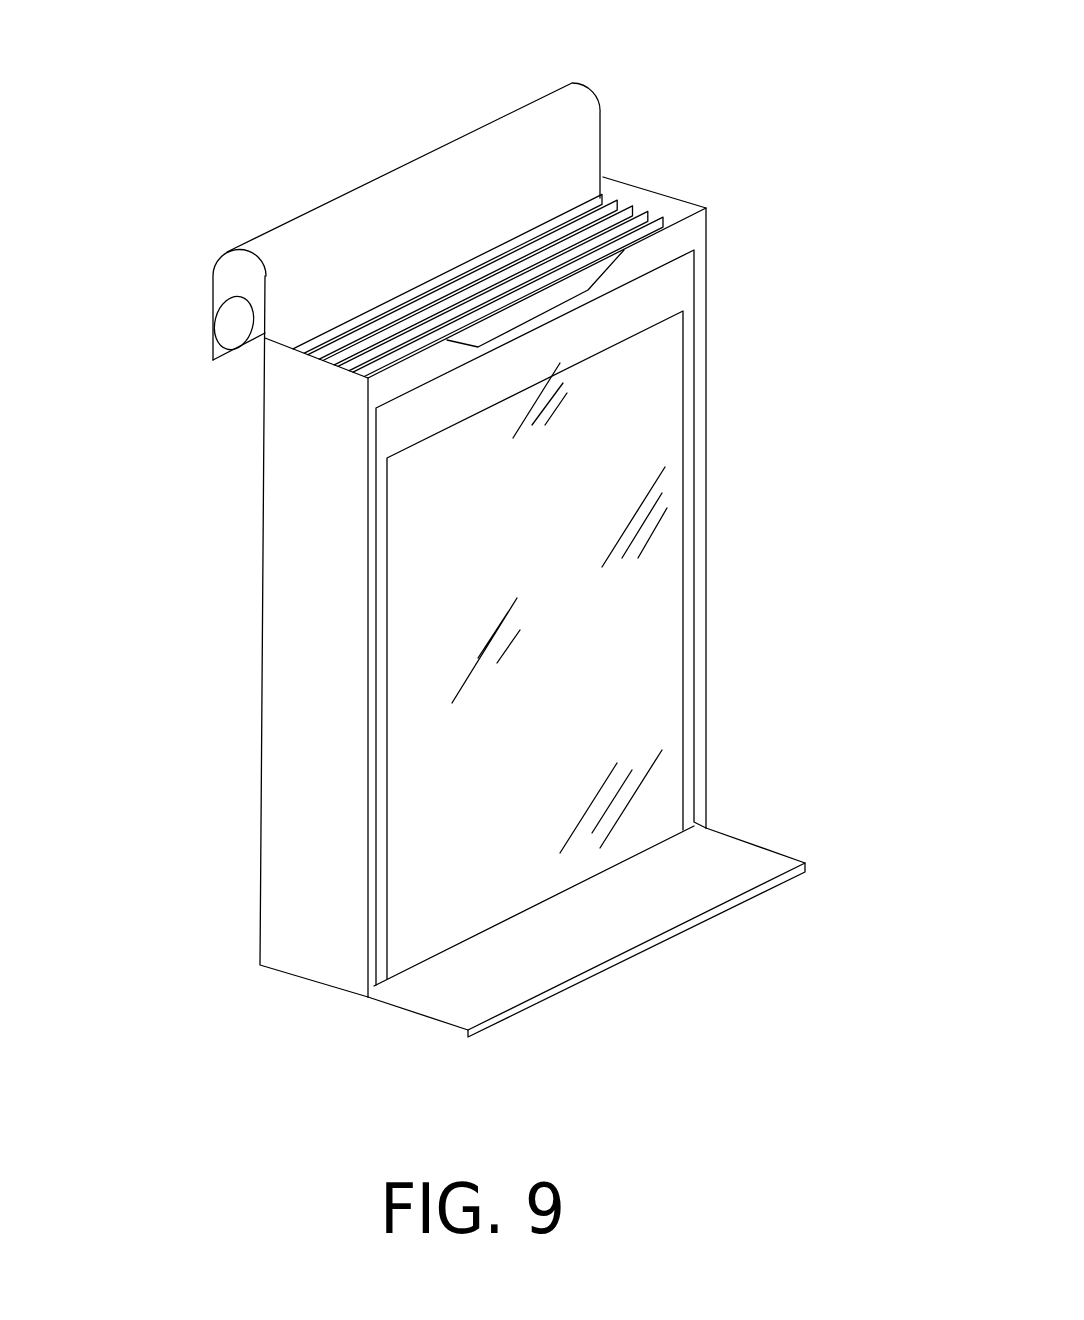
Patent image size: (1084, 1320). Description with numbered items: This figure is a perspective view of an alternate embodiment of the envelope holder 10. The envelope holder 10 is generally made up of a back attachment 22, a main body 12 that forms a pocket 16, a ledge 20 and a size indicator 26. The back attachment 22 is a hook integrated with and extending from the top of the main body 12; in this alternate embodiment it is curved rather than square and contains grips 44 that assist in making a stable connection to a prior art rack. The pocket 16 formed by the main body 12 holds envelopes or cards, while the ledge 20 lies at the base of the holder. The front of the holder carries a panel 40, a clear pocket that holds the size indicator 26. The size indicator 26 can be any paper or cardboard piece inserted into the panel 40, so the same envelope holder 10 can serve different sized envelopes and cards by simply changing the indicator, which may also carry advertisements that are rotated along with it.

The envelope holder 10 is at (370, 135).
The main body 12 is at (313, 603).
The pocket 16 is at (507, 225).
The ledge 20 is at (675, 893).
The back attachment 22 is at (240, 270).
The size indicator 26 is at (660, 598).
The panel 40 is at (610, 367).
The grips 44 is at (232, 327).